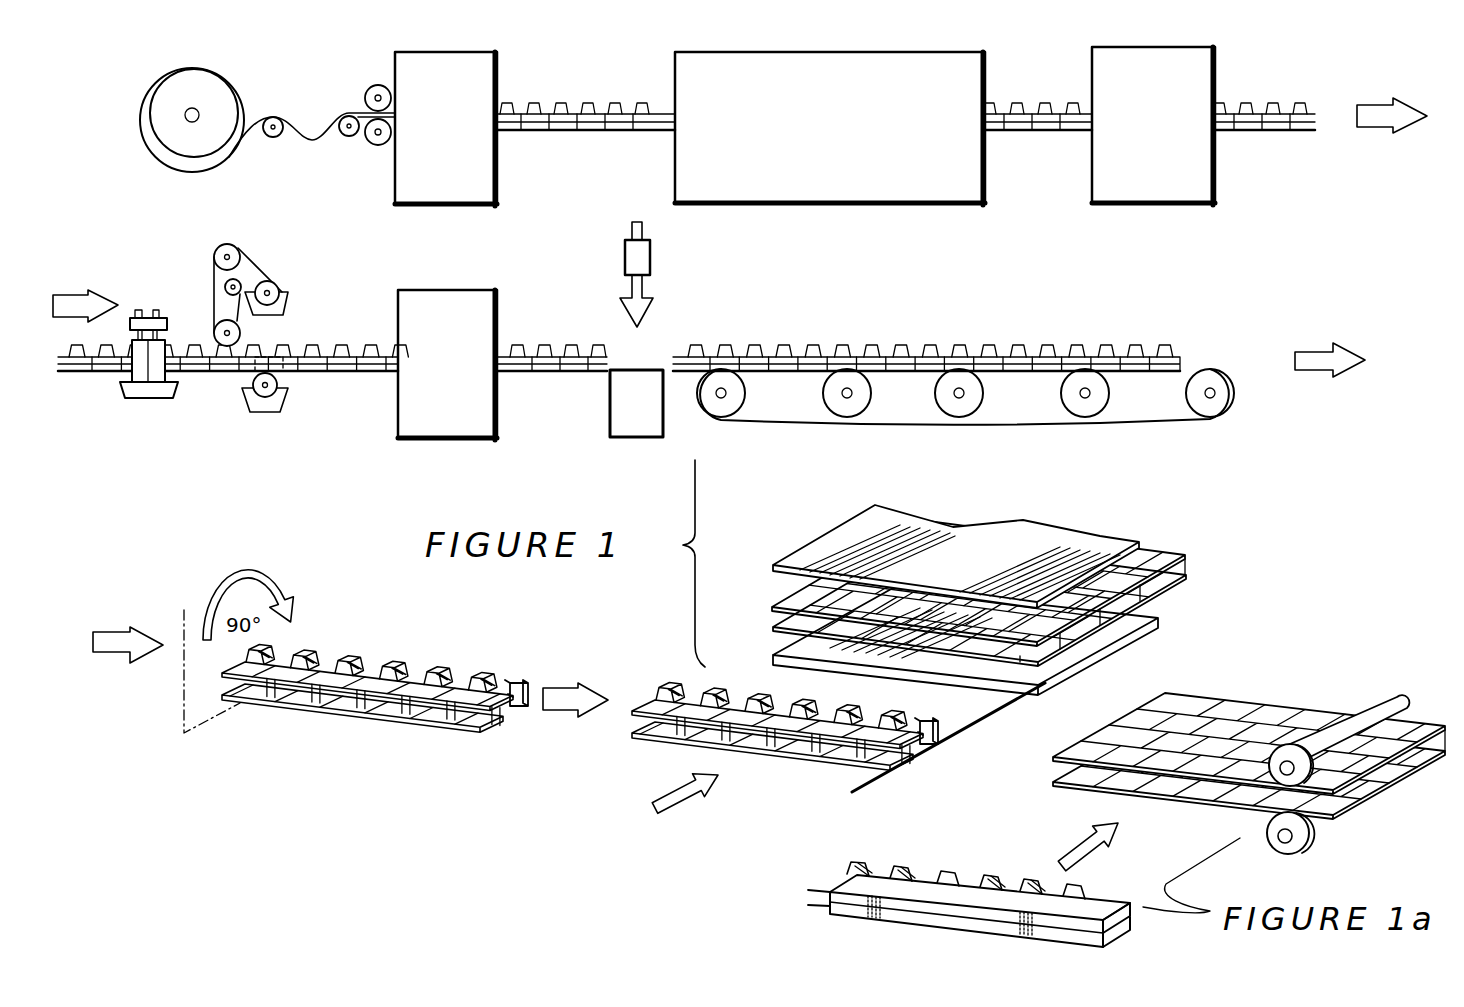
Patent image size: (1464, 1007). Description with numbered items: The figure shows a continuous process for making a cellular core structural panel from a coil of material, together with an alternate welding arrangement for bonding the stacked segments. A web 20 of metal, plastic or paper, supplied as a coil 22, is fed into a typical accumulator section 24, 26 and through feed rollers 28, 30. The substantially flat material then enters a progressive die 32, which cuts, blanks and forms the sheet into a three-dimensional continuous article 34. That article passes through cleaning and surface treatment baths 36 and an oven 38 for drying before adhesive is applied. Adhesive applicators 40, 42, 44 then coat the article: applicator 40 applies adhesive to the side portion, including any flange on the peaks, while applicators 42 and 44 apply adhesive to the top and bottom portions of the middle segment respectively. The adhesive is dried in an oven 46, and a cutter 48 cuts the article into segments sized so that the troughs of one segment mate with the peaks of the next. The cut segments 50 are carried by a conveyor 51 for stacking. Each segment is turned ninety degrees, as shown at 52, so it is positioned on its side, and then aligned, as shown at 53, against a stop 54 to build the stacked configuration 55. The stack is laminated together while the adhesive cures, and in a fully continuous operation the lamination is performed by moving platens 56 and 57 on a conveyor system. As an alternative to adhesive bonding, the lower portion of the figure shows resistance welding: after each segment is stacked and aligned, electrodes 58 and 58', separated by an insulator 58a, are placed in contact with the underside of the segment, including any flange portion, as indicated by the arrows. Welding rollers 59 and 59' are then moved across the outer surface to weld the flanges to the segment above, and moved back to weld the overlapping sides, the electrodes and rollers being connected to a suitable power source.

In FIG. 1, the web 20 is at (163, 156).
In FIG. 1, the coil 22 is at (222, 102).
In FIG. 1, the accumulator section 24 is at (272, 138).
In FIG. 1, the accumulator section 26 is at (345, 137).
In FIG. 1, the feed roller 28 is at (367, 91).
In FIG. 1, the feed roller 30 is at (374, 146).
In FIG. 1, the progressive die 32 is at (500, 78).
In FIG. 1, the three-dimensional continuous article 34 is at (628, 128).
In FIG. 1, the cleaning and surface treatment baths 36 is at (686, 76).
In FIG. 1, the oven 38 is at (1148, 124).
In FIG. 1, the adhesive applicator 40 is at (140, 363).
In FIG. 1, the adhesive applicator 42 is at (240, 333).
In FIG. 1, the adhesive applicator 44 is at (270, 368).
In FIG. 1, the oven 46 is at (480, 312).
In FIG. 1, the cutter 48 is at (637, 255).
In FIG. 1, the cut segments 50 is at (985, 342).
In FIG. 1, the conveyor 51 is at (1193, 367).
In FIG. 1, the turned segment 52 is at (413, 715).
In FIG. 1, the aligned segment 53 is at (747, 742).
In FIG. 1, the stop 54 is at (868, 778).
In FIG. 1, the stacked configuration 55 is at (1130, 597).
In FIG. 1, the moving platen 56 is at (1130, 548).
In FIG. 1, the moving platen 57 is at (1130, 640).
In FIG. 1A, the electrode 58 is at (969, 890).
In FIG. 1A, the electrode 58' is at (966, 925).
In FIG. 1A, the insulator 58a is at (1106, 930).
In FIG. 1A, the welding roller 59 is at (1339, 729).
In FIG. 1A, the welding roller 59' is at (1329, 834).